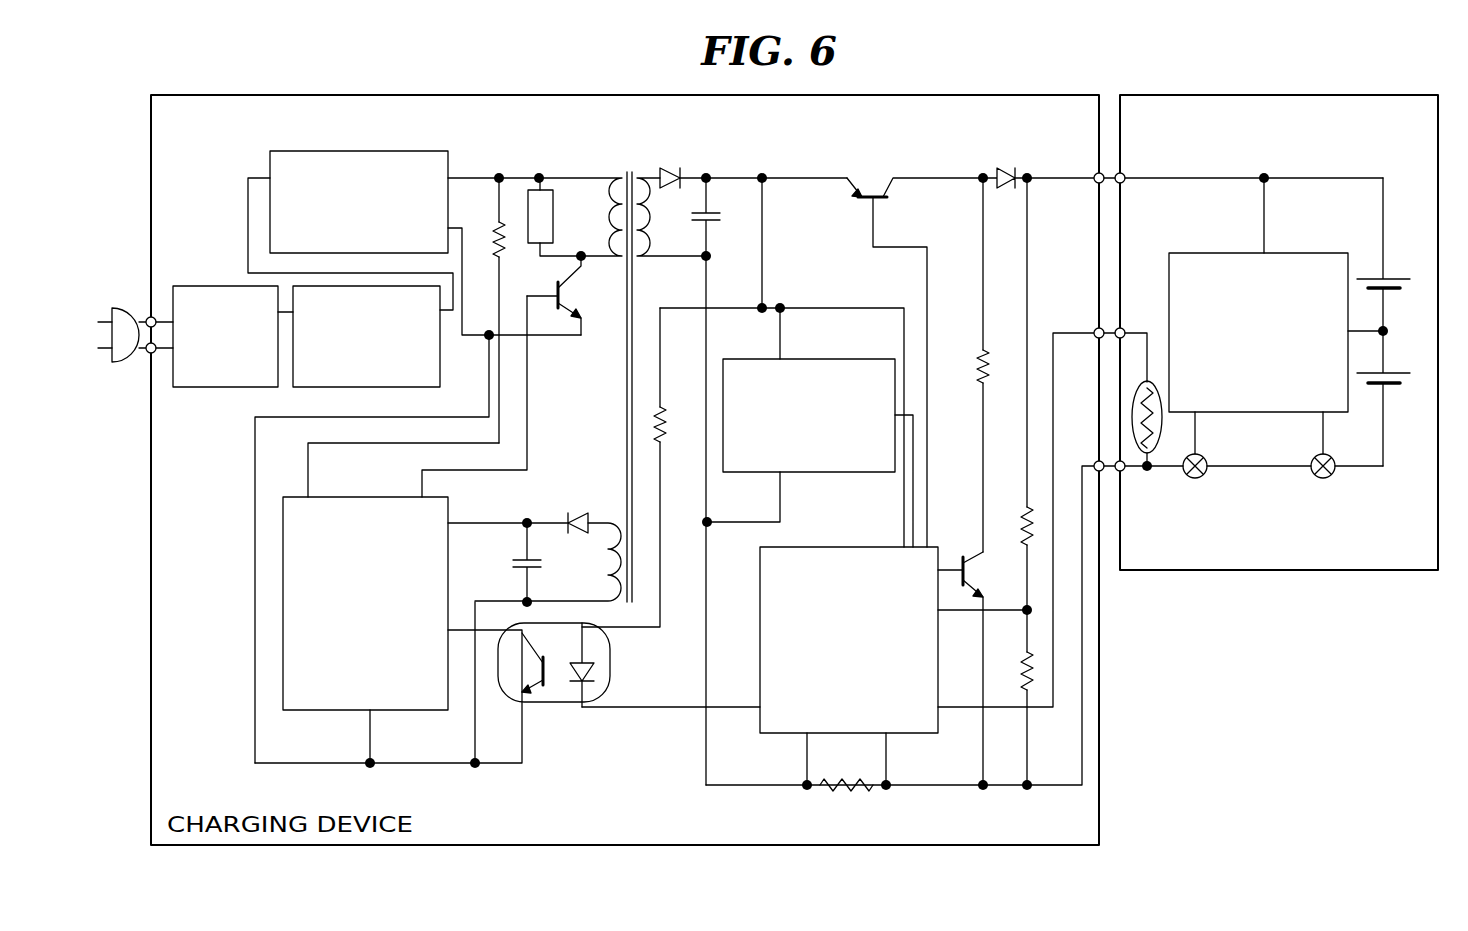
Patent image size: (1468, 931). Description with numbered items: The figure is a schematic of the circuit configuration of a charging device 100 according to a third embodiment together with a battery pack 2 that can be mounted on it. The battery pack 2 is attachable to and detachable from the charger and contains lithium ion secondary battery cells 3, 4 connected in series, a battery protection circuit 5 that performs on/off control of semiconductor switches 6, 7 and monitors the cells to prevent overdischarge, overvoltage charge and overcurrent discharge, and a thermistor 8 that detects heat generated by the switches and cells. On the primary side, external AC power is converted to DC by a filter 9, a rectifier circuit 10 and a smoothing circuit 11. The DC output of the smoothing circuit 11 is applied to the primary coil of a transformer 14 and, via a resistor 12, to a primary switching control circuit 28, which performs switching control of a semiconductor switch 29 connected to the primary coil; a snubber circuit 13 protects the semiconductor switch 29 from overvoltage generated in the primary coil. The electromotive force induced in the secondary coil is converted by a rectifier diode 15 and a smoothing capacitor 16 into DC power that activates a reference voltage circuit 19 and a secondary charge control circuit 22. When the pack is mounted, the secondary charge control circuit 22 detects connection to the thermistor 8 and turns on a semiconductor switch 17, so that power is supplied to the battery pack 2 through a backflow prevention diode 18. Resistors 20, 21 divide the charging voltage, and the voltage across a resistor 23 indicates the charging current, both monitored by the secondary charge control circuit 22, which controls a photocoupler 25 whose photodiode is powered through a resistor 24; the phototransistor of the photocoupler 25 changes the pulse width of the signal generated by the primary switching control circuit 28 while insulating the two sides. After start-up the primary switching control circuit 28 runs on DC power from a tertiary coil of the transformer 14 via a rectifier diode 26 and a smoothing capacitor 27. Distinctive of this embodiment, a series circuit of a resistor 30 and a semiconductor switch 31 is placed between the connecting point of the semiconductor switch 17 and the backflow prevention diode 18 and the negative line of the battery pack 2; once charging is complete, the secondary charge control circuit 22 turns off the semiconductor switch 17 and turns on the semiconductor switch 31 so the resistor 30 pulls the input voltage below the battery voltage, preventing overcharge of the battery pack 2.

The battery pack 2 is at (1320, 570).
The lithium ion secondary battery cell 3 is at (1393, 290).
The lithium ion secondary battery cell 4 is at (1393, 385).
The battery protection circuit 5 is at (1322, 253).
The semiconductor switch 6 is at (1330, 477).
The semiconductor switch 7 is at (1202, 477).
The thermistor 8 is at (1147, 380).
The filter 9 is at (192, 286).
The rectifier circuit 10 is at (293, 387).
The smoothing circuit 11 is at (430, 151).
The resistor 12 is at (495, 236).
The snubber circuit 13 is at (553, 206).
The transformer 14 is at (613, 178).
The rectifier diode 15 is at (667, 168).
The smoothing capacitor 16 is at (700, 220).
The semiconductor switch 17 is at (866, 200).
The backflow prevention diode 18 is at (1002, 166).
The reference voltage circuit 19 is at (796, 472).
The resistor 20 is at (1026, 507).
The resistor 21 is at (1024, 665).
The secondary charge control circuit 22 is at (770, 736).
The resistor 23 is at (851, 793).
The resistor 24 is at (665, 410).
The photocoupler 25 is at (525, 703).
The rectifier diode 26 is at (578, 511).
The smoothing capacitor 27 is at (515, 563).
The primary switching control circuit 28 is at (418, 712).
The semiconductor switch 29 is at (556, 290).
The resistor 30 is at (982, 350).
The semiconductor switch 31 is at (961, 562).
The charging device 100 is at (151, 286).